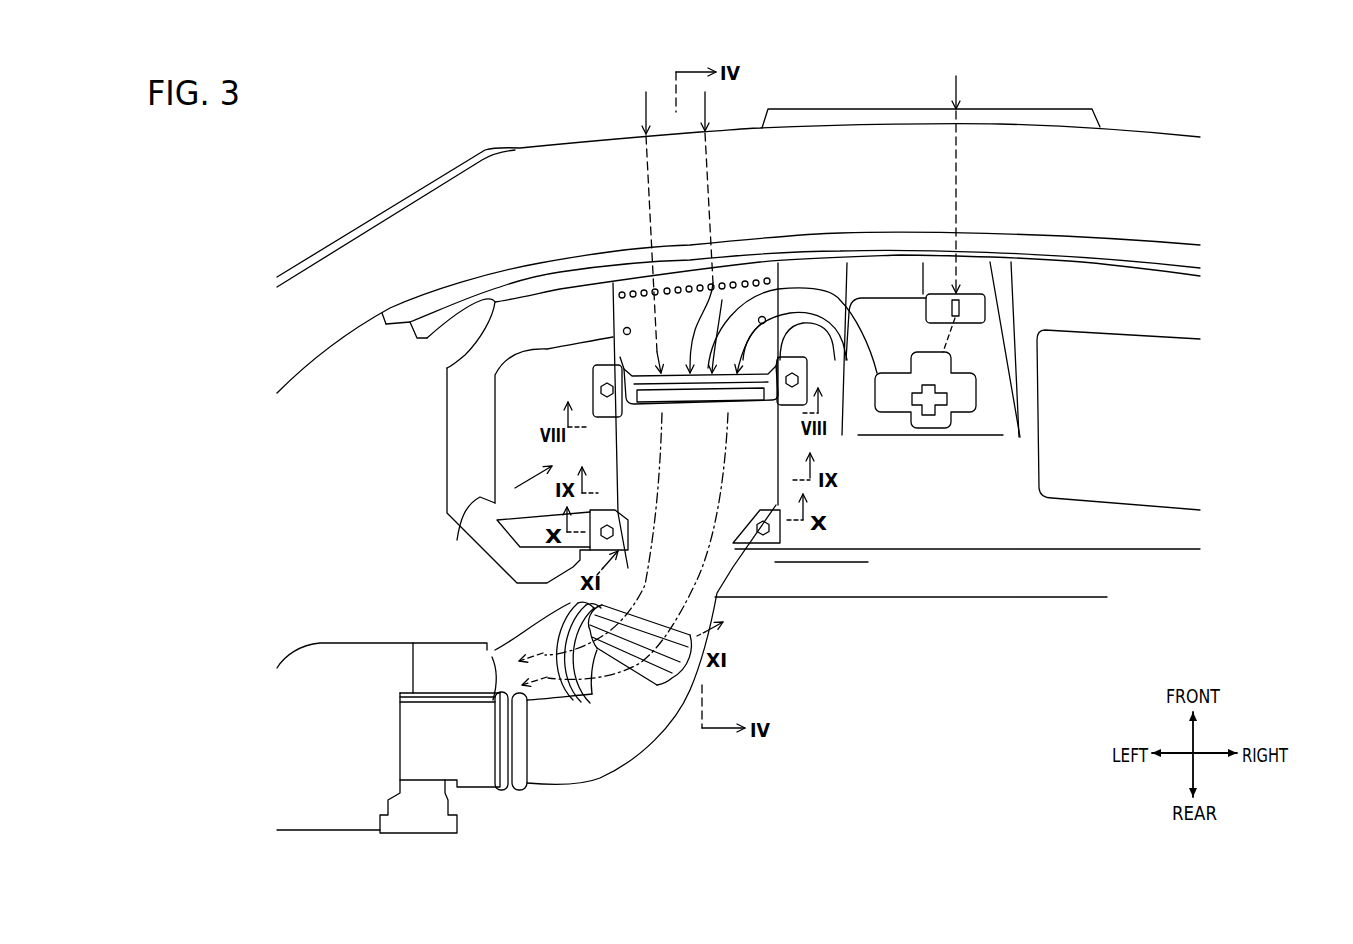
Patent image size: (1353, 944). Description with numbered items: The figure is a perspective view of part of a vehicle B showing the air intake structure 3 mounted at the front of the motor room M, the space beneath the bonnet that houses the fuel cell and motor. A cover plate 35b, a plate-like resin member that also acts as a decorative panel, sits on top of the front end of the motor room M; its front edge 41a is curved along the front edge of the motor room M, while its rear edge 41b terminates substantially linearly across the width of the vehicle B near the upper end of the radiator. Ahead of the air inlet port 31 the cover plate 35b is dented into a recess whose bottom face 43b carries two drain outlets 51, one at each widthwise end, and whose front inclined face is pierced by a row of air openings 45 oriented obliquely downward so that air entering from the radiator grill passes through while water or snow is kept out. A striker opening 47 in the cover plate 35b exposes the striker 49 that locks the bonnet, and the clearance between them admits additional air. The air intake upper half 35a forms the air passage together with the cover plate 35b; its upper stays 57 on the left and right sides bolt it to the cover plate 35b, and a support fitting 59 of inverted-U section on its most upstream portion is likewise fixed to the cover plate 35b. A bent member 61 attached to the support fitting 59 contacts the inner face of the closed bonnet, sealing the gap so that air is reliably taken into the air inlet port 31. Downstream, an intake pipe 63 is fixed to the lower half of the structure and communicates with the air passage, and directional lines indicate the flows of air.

The air intake structure 3 is at (457, 540).
The air inlet port 31 is at (502, 369).
The air intake upper half 35a is at (712, 570).
The cover plate 35b is at (990, 519).
The front edge 41a is at (1143, 243).
The rear edge 41b is at (973, 550).
The bottom face 43b is at (683, 308).
The air openings 45 is at (620, 292).
The striker opening 47 is at (958, 303).
The striker 49 is at (985, 302).
The drain outlet 51 is at (622, 331).
The upper stays 57 is at (612, 412).
The support fitting 59 is at (742, 392).
The bent member 61 is at (745, 538).
The intake pipe 63 is at (615, 673).
The vehicle B is at (1148, 154).
The motor room M is at (1037, 719).